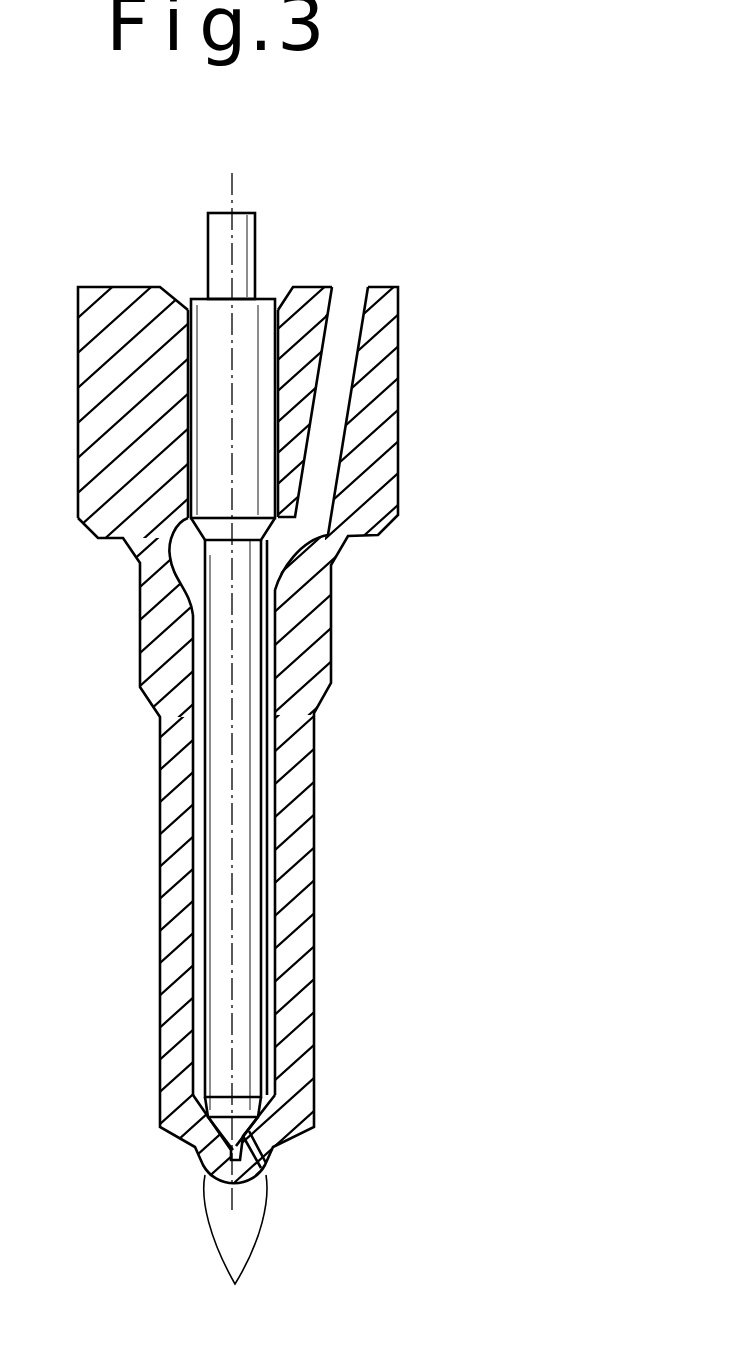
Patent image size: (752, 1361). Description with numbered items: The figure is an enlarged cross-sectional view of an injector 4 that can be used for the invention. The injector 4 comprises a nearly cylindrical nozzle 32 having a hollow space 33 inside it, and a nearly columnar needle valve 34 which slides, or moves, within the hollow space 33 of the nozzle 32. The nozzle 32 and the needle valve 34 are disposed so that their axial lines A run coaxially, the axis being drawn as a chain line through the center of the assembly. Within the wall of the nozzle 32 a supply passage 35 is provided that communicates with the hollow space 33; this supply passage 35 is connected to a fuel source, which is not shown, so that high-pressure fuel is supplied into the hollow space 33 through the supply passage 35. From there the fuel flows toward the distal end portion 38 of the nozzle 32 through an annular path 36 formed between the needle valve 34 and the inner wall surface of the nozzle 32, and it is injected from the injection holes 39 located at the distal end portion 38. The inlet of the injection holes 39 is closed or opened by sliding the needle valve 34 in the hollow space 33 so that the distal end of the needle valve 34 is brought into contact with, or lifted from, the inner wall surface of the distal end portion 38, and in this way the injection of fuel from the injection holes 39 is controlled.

The injector 4 is at (470, 569).
The axial lines A is at (232, 181).
The nozzle 32 is at (300, 897).
The hollow space 33 is at (278, 563).
The needle valve 34 is at (253, 817).
The supply passage 35 is at (330, 402).
The annular path 36 is at (270, 730).
The distal end portion 38 is at (135, 1050).
The injection holes 39 is at (235, 1233).